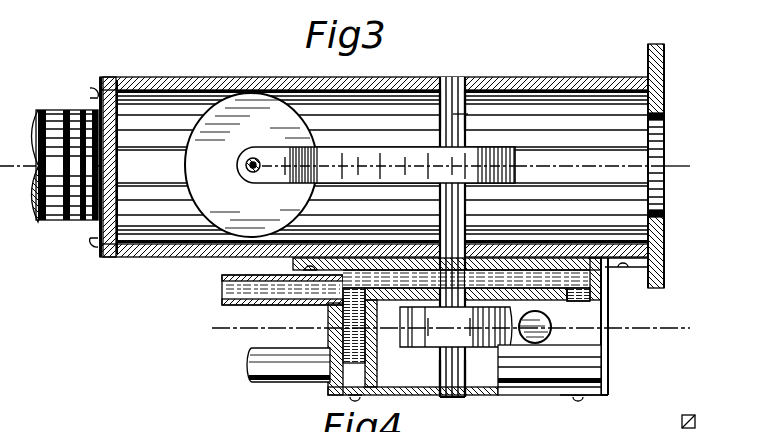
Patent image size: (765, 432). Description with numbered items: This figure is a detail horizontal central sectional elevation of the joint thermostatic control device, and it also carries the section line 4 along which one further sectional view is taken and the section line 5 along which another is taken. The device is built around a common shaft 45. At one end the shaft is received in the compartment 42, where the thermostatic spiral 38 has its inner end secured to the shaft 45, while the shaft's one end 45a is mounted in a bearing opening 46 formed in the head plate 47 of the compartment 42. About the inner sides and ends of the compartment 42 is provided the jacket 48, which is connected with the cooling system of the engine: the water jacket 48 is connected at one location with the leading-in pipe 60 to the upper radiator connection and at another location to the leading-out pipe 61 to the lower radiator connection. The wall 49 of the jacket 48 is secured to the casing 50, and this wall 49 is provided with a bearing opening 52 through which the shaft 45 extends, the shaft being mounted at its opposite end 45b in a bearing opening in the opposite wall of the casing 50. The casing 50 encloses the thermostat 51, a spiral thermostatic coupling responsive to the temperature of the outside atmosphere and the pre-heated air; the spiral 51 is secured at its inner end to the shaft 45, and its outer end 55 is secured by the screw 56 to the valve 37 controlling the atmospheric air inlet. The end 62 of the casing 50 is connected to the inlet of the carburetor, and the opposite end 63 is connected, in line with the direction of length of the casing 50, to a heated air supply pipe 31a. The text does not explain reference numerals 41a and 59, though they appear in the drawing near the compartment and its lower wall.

The section line 4— 4 is at (685, 168).
The section line 5— 5 is at (450, 328).
The heated air supply pipe 31a is at (77, 142).
The valve 37 is at (207, 190).
The thermostatic spiral 38 is at (456, 339).
The ball 41a is at (555, 335).
The compartment 42 is at (410, 376).
The shaft 45 is at (468, 114).
The one end of shaft 45a is at (467, 398).
The opposite end of shaft 45b is at (452, 115).
The bearing opening 46 is at (447, 398).
The head plate 47 is at (537, 389).
The jacket 48 is at (590, 300).
The wall of jacket 49 is at (535, 230).
The casing 50 is at (537, 140).
The thermostat 51 is at (388, 160).
The bearing opening 52 is at (508, 205).
The outer end of spiral 55 is at (260, 185).
The screw 56 is at (244, 160).
The member 59 is at (568, 424).
The leading-in pipe 60 is at (256, 380).
The leading-out pipe 61 is at (240, 306).
The end of casing 62 is at (663, 70).
The opposite end of casing 63 is at (110, 150).